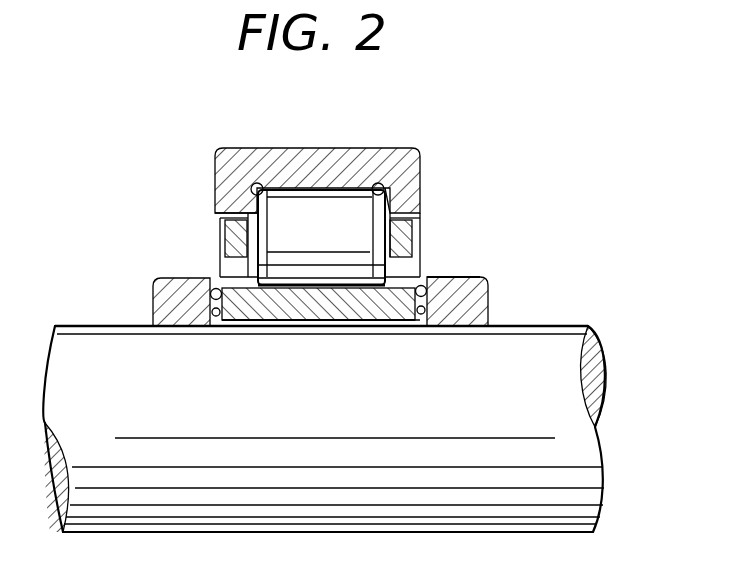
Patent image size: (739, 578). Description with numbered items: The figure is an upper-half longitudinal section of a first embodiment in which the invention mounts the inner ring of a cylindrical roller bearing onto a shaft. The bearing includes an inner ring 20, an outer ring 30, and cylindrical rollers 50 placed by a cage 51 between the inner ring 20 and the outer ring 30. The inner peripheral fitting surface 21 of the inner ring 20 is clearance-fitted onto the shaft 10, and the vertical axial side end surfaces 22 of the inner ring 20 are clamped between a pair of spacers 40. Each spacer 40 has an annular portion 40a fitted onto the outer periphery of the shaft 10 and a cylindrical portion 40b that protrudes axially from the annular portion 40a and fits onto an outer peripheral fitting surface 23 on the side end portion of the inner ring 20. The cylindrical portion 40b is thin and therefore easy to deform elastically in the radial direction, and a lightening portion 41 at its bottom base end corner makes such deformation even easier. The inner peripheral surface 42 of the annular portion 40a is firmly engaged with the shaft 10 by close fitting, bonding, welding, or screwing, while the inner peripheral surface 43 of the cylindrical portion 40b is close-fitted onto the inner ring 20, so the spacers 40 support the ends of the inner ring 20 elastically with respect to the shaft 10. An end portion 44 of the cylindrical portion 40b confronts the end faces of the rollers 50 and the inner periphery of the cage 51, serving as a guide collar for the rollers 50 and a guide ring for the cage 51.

The shaft 10 is at (80, 326).
The inner ring 20 is at (262, 310).
The inner peripheral fitting surface 21 is at (358, 322).
The axial side end surfaces 22 is at (215, 300).
The outer peripheral fitting surface 23 is at (423, 270).
The outer ring 30 is at (281, 148).
The spacer 40 is at (321, 303).
The annular portion 40a is at (167, 297).
The cylindrical portion 40b is at (237, 277).
The lightening portion 41 is at (478, 277).
The inner peripheral surface of the annular portion 42 is at (472, 327).
The inner peripheral surface of the cylindrical portion 43 is at (397, 327).
The end portion 44 is at (397, 270).
The cylindrical roller 50 is at (339, 193).
The cage 51 is at (396, 148).